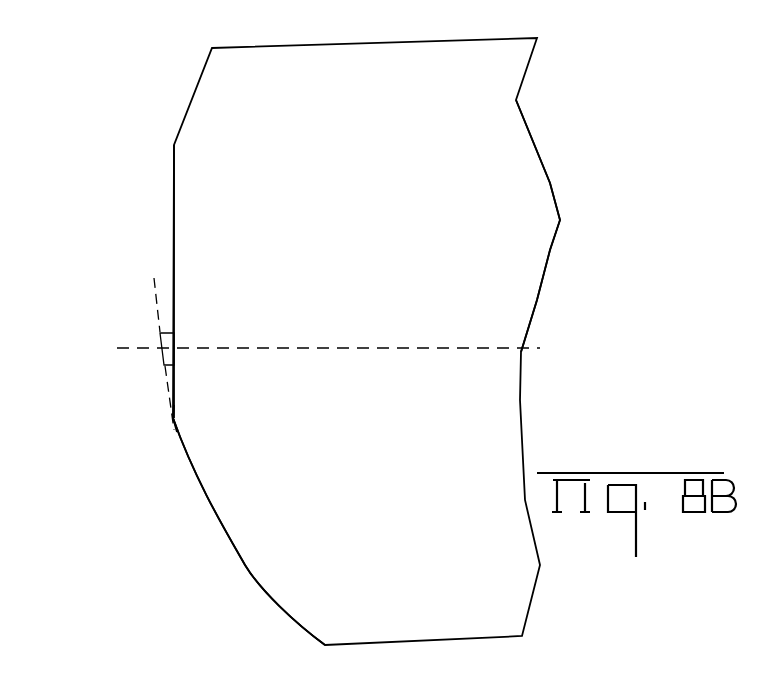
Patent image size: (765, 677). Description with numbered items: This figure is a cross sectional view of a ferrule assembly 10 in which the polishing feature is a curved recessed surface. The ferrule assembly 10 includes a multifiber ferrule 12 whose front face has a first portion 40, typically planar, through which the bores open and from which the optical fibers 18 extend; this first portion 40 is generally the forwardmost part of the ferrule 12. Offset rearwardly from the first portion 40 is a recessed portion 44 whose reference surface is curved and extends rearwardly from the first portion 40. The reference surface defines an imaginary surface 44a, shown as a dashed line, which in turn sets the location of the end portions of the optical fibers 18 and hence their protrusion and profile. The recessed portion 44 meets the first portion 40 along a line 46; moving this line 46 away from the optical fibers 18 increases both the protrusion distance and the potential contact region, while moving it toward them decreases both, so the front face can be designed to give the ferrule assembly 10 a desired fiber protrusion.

The ferrule assembly 10 is at (538, 107).
The multifiber ferrule 12 is at (513, 197).
The optical fibers 18 is at (160, 357).
The first portion 40 is at (175, 298).
The recessed portion 44 is at (220, 524).
The imaginary surface 44a is at (155, 303).
The line 46 is at (176, 420).